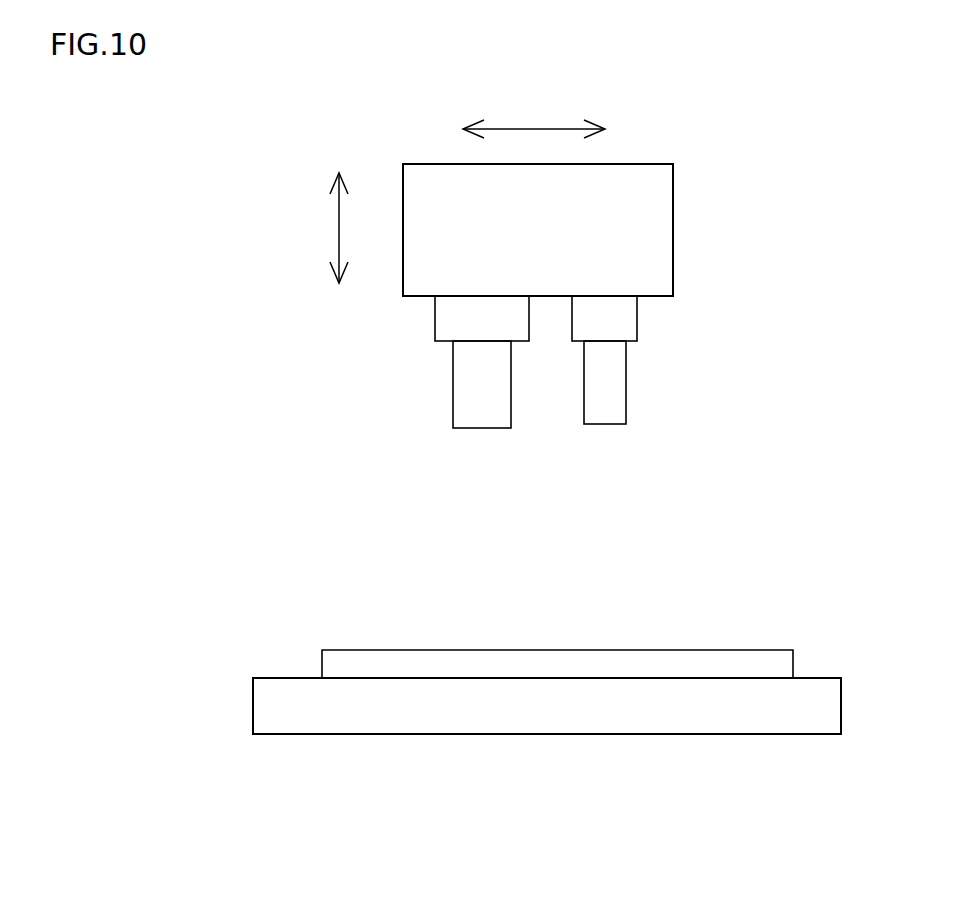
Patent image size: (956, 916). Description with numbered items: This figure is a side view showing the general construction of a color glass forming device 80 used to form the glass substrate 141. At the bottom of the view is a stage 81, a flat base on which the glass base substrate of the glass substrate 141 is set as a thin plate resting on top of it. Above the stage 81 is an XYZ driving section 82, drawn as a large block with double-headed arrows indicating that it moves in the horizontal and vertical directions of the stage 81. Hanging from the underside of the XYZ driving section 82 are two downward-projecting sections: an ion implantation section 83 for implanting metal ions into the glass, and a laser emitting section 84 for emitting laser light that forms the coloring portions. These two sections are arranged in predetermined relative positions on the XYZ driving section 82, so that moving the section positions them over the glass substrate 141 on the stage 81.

The color glass forming device 80 is at (190, 622).
The stage 81 is at (262, 697).
The XYZ driving section 82 is at (433, 187).
The ion implantation section 83 is at (593, 397).
The laser emitting section 84 is at (468, 384).
The glass substrate 141 is at (772, 660).